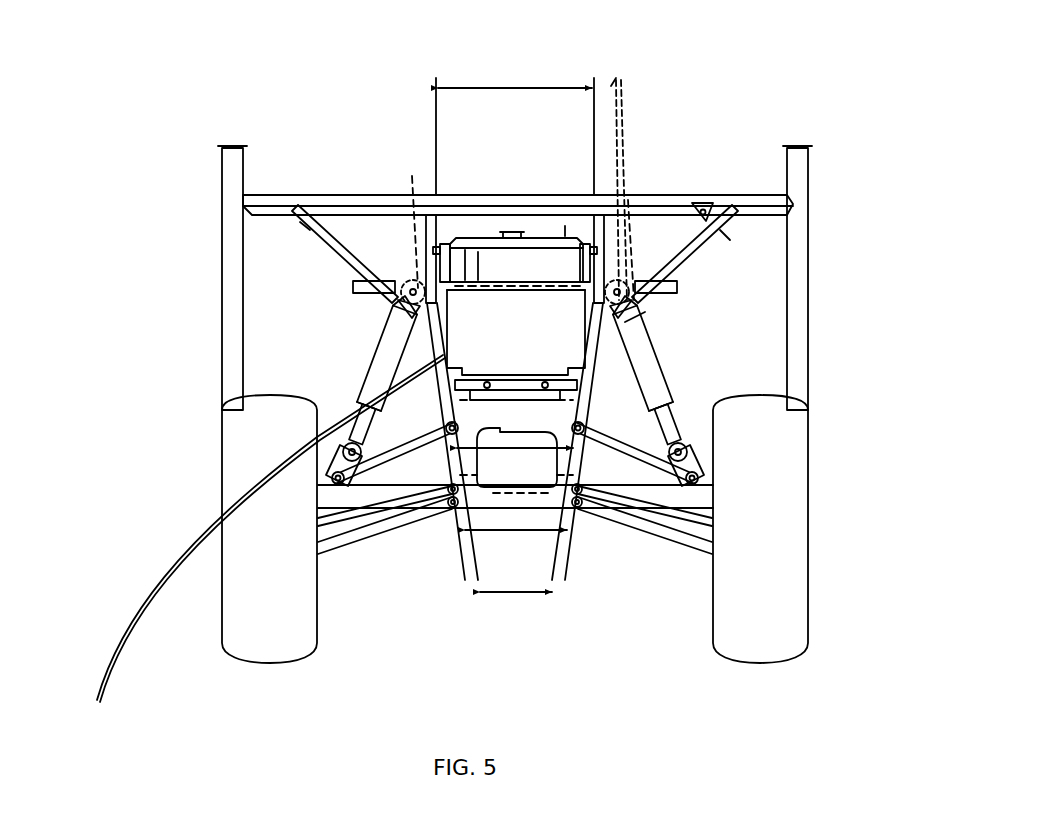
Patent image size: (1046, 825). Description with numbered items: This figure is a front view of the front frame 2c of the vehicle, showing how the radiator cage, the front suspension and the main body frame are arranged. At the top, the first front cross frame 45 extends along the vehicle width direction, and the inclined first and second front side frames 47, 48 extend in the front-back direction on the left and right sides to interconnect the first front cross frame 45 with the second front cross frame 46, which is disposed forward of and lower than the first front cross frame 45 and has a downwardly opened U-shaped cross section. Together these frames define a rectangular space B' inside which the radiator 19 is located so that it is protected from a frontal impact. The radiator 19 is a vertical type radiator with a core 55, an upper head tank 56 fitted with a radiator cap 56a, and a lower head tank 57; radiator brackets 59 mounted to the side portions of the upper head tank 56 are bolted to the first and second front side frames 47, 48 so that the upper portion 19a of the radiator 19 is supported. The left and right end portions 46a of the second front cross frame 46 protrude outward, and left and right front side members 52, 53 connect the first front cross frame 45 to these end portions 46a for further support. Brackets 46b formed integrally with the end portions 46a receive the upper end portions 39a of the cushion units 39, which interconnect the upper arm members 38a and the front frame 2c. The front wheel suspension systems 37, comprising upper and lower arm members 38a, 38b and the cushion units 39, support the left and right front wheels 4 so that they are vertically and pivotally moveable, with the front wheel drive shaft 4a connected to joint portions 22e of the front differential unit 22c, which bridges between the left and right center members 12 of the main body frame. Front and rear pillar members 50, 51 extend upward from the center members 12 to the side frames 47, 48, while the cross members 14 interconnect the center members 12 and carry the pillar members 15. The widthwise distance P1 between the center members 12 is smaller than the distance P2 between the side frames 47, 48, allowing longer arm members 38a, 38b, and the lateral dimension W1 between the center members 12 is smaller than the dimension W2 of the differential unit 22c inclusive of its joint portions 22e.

The front frame 2c is at (703, 178).
The front wheel 4 is at (222, 433).
The front wheel drive shaft 4a is at (368, 552).
The center member 12 is at (464, 580).
The cross member 14 is at (358, 542).
The pillar member 15 is at (221, 200).
The radiator 19 is at (548, 236).
The upper portion of the radiator 19a is at (465, 262).
The front differential unit 22c is at (500, 395).
The joint portion 22e is at (518, 392).
The front wheel suspension system 37 is at (398, 549).
The upper arm member 38a is at (338, 446).
The lower arm member 38b is at (427, 522).
The cushion unit 39 is at (366, 358).
The upper end portion of the cushion unit 39a is at (648, 250).
The first front cross frame 45 is at (648, 196).
The second front cross frame 46 is at (392, 280).
The end portion of the second front cross frame 46a is at (384, 266).
The bracket 46b is at (395, 316).
The first front side frame 47 is at (620, 189).
The second front side frame 48 is at (413, 280).
The front pillar member 50 is at (258, 543).
The rear pillar member 51 is at (392, 448).
The front side member 52 is at (722, 234).
The front side member 53 is at (300, 226).
The core 55 is at (640, 336).
The upper head tank 56 is at (478, 252).
The radiator cap 56a is at (511, 230).
The lower head tank 57 is at (535, 392).
The radiator bracket 59 is at (443, 248).
The vehicle widthwise distance between center members P1 is at (518, 596).
The vehicle widthwise distance between front side frames P2 is at (514, 88).
The vehicle-lateral dimension between center members W1 is at (500, 532).
The vehicle-lateral dimension of the front differential unit W2 is at (500, 442).
The rectangular space B' is at (576, 193).